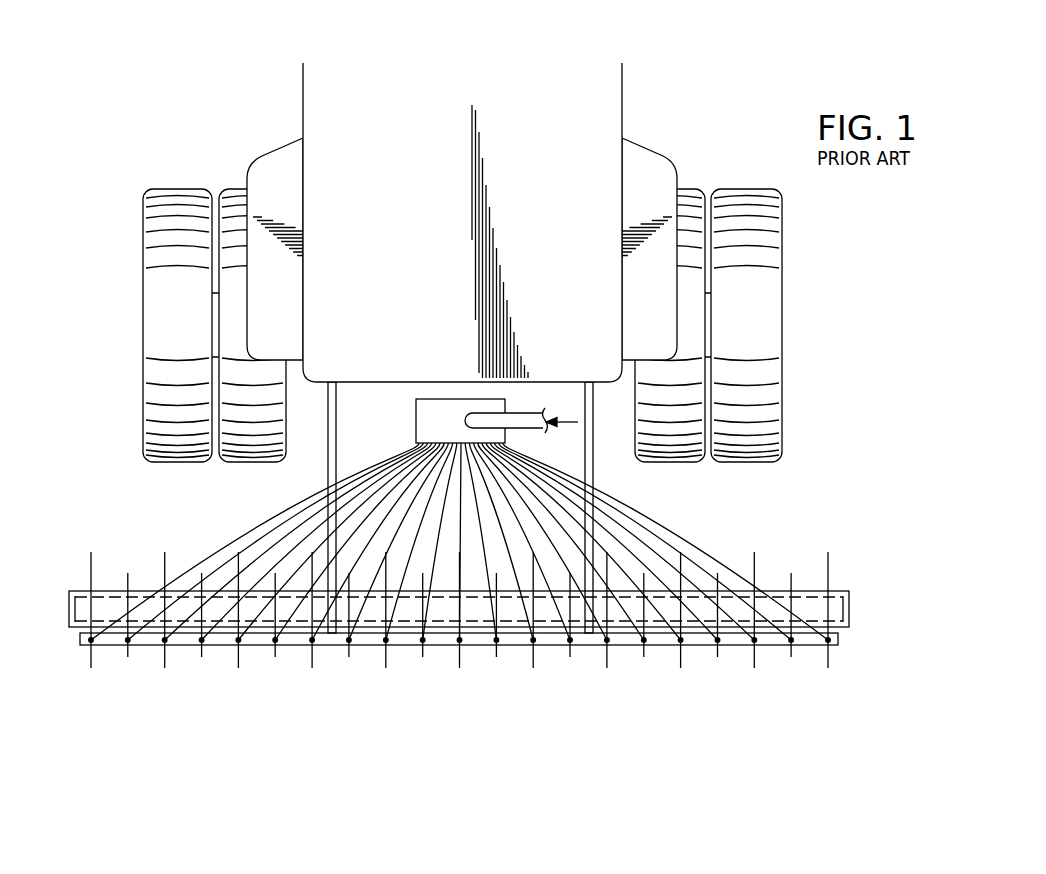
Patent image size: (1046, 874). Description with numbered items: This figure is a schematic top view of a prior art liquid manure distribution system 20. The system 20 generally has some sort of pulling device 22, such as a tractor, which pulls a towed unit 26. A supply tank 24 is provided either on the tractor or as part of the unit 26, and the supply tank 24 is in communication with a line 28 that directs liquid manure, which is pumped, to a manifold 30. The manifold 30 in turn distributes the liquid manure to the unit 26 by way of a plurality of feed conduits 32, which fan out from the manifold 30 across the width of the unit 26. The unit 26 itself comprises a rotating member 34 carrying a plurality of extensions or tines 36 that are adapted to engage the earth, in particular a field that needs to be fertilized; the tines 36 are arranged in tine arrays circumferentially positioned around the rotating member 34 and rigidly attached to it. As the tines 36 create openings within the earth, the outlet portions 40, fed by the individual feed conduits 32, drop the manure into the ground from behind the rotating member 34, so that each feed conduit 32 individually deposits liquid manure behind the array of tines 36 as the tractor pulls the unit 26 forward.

The system 20 is at (818, 357).
The pulling device 22 is at (340, 52).
The supply tank 24 is at (578, 105).
The unit 26 is at (823, 520).
The line 28 is at (521, 428).
The manifold 30 is at (435, 418).
The feed conduits 32 is at (666, 513).
The rotating member 34 is at (840, 612).
The tines 36 is at (755, 566).
The outlet portions 40 is at (387, 645).